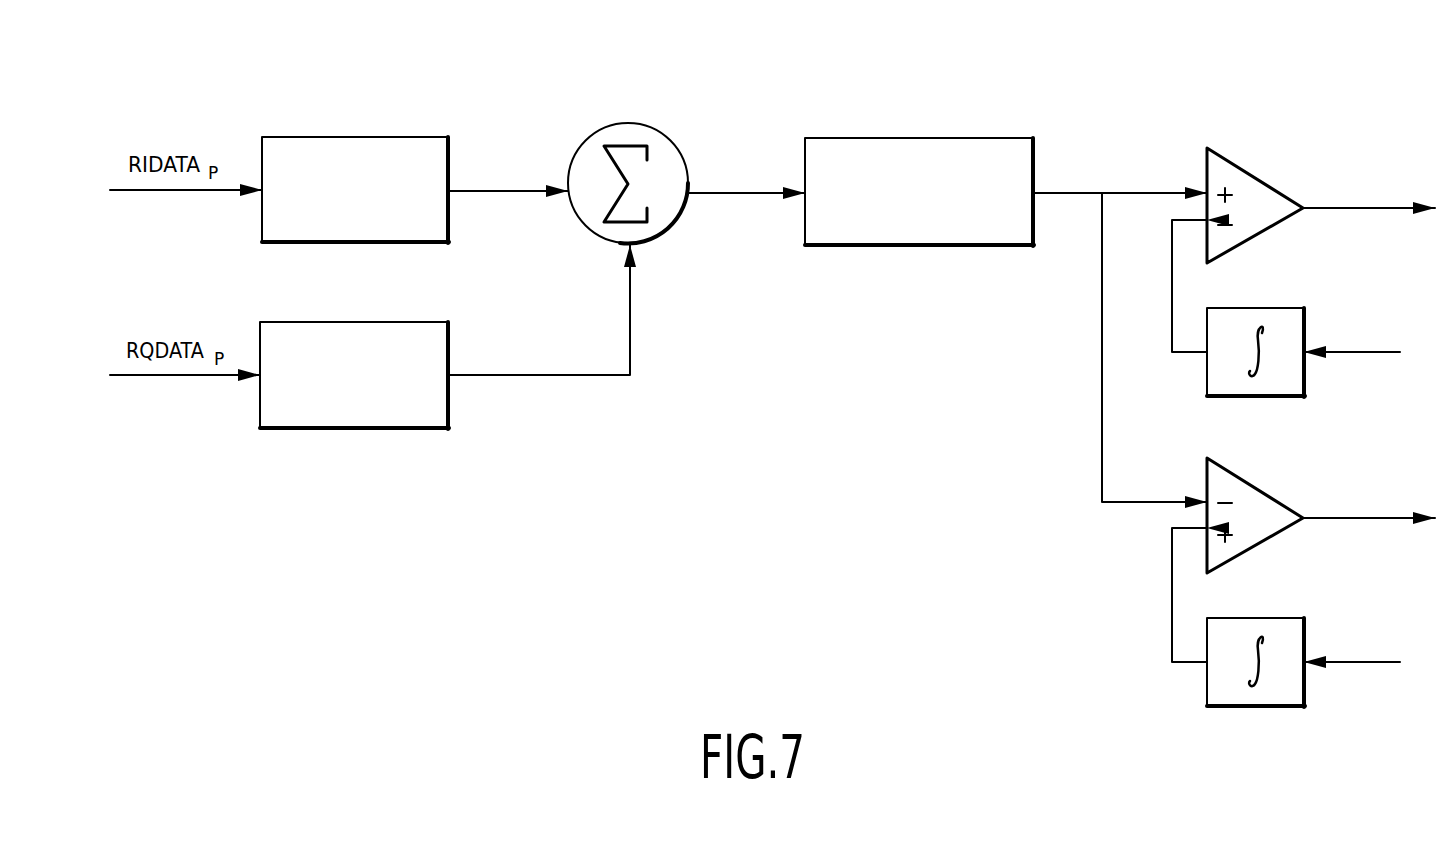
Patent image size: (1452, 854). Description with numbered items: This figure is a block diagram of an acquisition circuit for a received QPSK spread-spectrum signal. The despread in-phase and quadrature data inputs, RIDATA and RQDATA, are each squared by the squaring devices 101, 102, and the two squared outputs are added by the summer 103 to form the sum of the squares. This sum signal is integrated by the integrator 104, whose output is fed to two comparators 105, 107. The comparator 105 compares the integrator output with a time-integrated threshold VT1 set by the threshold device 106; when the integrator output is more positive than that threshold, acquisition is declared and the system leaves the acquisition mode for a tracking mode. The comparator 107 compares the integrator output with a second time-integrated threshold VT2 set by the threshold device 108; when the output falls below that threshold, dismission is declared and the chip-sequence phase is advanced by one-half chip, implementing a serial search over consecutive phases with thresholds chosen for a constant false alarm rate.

The squaring device 101 is at (357, 137).
The squaring device 102 is at (448, 322).
The summer 103 is at (632, 123).
The integrator 104 is at (922, 138).
The comparator 105 is at (1257, 176).
The threshold device 106 is at (1303, 308).
The comparator 107 is at (1257, 486).
The threshold device 108 is at (1303, 618).